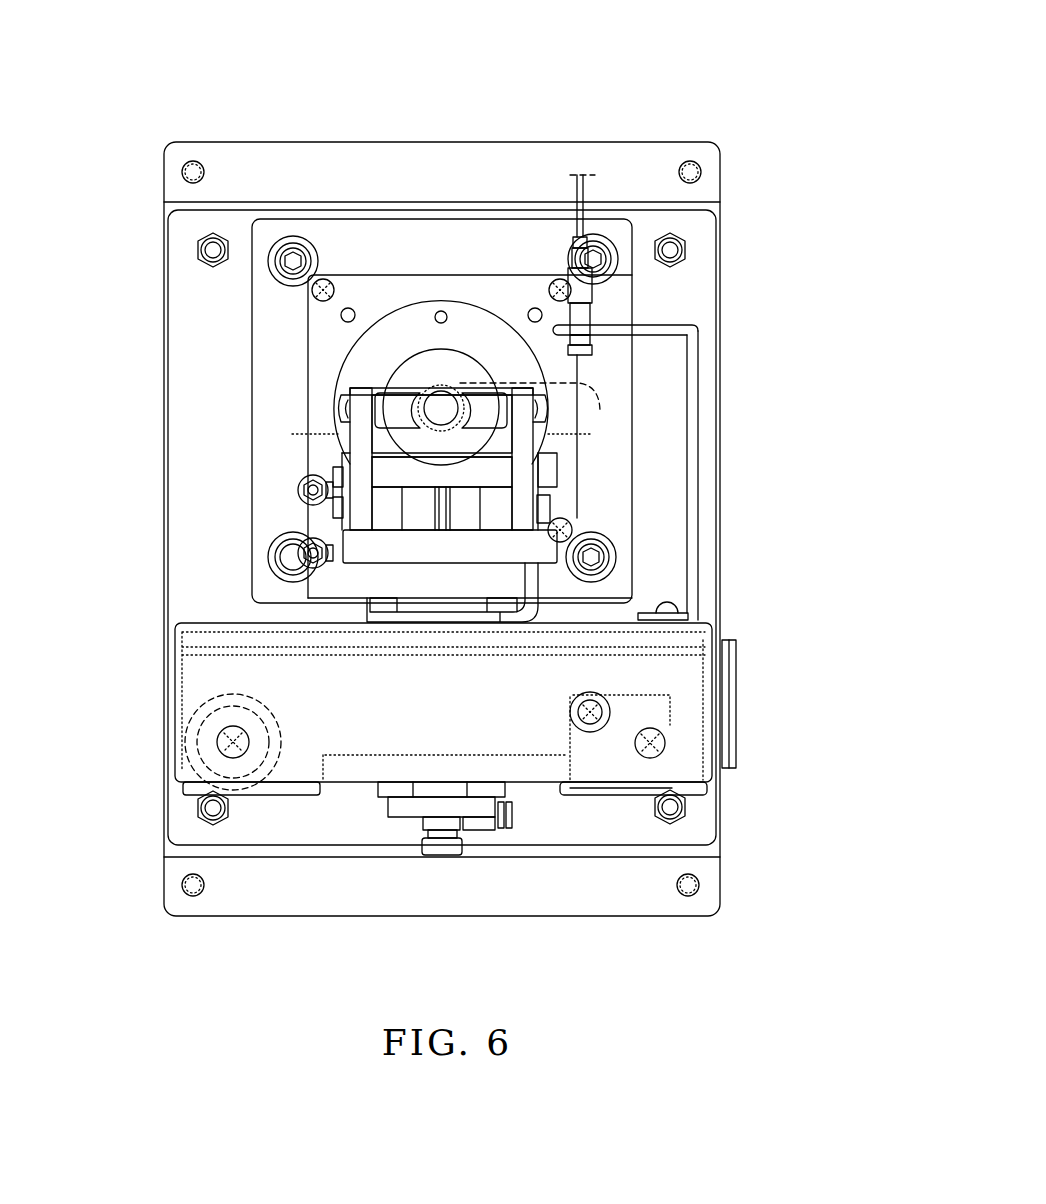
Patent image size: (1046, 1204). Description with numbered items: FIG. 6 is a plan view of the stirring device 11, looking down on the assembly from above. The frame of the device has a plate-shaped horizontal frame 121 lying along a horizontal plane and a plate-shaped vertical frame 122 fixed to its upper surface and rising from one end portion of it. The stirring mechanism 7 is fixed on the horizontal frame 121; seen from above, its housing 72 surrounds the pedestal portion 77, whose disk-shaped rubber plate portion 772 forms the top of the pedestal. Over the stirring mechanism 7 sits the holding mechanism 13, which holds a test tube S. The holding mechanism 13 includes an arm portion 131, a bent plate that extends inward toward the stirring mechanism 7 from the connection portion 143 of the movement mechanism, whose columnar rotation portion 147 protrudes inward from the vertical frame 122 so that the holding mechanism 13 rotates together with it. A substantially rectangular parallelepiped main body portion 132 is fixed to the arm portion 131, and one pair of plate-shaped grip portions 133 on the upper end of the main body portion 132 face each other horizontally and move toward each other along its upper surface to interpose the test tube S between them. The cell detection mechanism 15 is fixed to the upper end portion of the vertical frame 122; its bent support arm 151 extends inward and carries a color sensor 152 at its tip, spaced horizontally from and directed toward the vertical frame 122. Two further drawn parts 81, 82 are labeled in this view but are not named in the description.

The stirring device 11 is at (678, 88).
The horizontal frame 121 is at (192, 141).
The vertical frame 122 is at (703, 628).
The stirring mechanism 7 is at (245, 332).
The housing 72 is at (250, 378).
The pedestal portion 77 is at (430, 345).
The plate portion 772 is at (480, 355).
The pin 81 is at (424, 383).
The shaft 82 is at (604, 418).
The test tube S is at (450, 380).
The holding mechanism 13 is at (560, 468).
The grip portions 133 is at (360, 435).
The main body portion 132 is at (565, 547).
The arm portion 131 is at (545, 590).
The cell detection mechanism 15 is at (706, 343).
The support arm 151 is at (700, 448).
The color sensor 152 is at (593, 297).
The rotation portion 147 is at (412, 808).
The connection portion 143 is at (477, 820).